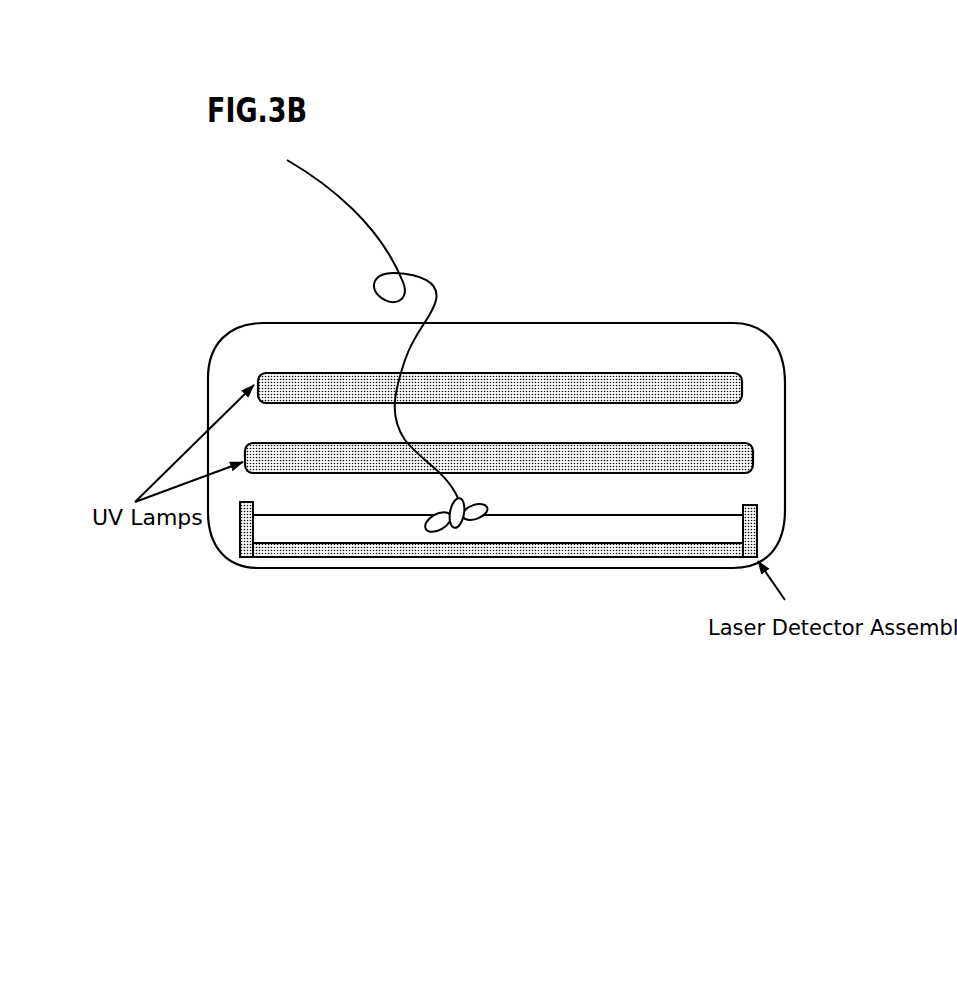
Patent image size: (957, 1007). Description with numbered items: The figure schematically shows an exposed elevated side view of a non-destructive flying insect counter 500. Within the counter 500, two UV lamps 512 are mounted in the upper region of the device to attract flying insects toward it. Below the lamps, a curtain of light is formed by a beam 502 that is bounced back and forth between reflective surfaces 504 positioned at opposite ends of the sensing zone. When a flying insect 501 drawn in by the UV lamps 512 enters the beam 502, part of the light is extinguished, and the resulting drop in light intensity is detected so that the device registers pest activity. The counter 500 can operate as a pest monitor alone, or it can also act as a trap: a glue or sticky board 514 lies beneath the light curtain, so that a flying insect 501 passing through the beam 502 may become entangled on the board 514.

The counter 500 is at (542, 290).
The flying insect 501 is at (432, 528).
The beam 502 is at (598, 530).
The reflective surfaces 504 is at (245, 518).
The UV lamps 512 is at (738, 462).
The glue or sticky board 514 is at (714, 545).